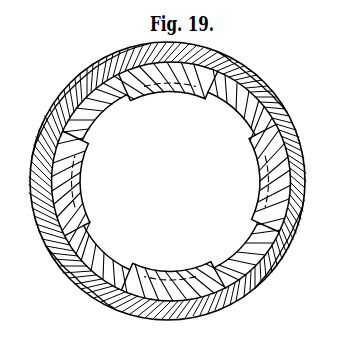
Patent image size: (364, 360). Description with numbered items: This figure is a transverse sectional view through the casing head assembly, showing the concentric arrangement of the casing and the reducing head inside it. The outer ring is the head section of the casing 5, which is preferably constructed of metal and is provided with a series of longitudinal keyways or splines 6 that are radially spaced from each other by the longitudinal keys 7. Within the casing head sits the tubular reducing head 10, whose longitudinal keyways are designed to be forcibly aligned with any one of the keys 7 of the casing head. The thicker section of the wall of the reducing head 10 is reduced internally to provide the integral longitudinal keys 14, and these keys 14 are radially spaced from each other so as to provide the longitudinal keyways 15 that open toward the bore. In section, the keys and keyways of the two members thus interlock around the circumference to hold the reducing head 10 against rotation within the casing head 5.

The head section of the casing 5 is at (272, 273).
The longitudinal keyways or splines 6 is at (270, 99).
The longitudinal keys 7 is at (290, 215).
The reducing head 10 is at (277, 152).
The integral longitudinal keys 14 is at (278, 248).
The longitudinal keyways 15 is at (306, 178).